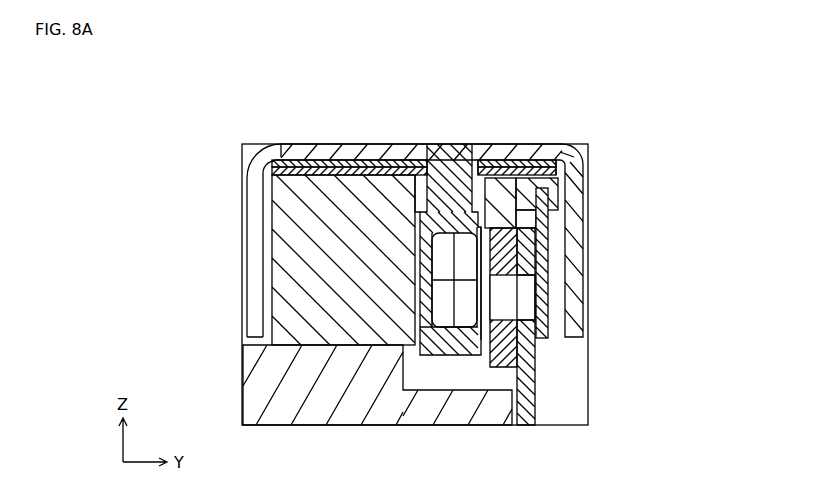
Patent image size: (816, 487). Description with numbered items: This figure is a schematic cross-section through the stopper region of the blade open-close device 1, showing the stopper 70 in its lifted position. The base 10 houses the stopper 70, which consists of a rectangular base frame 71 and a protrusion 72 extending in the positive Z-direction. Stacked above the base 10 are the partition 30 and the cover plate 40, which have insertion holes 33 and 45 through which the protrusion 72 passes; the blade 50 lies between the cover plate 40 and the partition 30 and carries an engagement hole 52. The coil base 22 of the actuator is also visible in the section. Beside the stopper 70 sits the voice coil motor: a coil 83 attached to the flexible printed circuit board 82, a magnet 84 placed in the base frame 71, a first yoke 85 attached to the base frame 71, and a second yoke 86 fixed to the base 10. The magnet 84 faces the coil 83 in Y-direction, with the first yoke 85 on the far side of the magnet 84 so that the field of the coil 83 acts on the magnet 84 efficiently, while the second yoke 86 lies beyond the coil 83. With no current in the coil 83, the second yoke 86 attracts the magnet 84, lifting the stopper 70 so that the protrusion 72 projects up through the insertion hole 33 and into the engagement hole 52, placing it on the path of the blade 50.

The blade open-close device 1 is at (645, 124).
The base 10 is at (288, 241).
The coil base 22 is at (339, 420).
The partition 30 is at (392, 170).
The insertion hole 33 is at (463, 160).
The cover plate 40 is at (530, 146).
The insertion hole 45 is at (473, 160).
The blade 50 is at (346, 161).
The engagement hole 52 is at (420, 148).
The stopper 70 is at (434, 377).
The base frame 71 is at (458, 348).
The protrusion 72 is at (447, 148).
The flexible printed circuit board 82 is at (535, 392).
The coil 83 is at (512, 348).
The magnet 84 is at (481, 301).
The first yoke 85 is at (425, 283).
The second yoke 86 is at (548, 254).